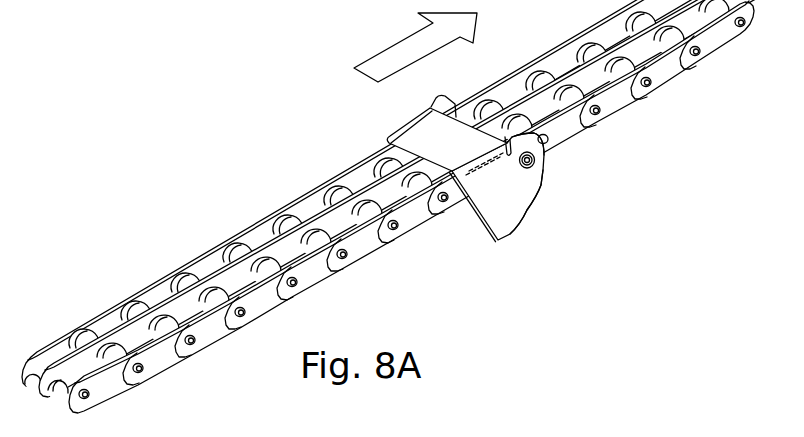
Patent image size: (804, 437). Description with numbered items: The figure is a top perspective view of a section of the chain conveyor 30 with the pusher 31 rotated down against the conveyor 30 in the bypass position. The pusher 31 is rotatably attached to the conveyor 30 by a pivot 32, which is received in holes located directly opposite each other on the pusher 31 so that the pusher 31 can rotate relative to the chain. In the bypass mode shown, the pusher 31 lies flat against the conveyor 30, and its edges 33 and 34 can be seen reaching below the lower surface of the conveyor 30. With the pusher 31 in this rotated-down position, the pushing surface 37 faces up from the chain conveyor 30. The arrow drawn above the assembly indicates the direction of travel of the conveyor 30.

The chain conveyor 30 is at (621, 105).
The pusher 31 is at (503, 212).
The pivot 32 is at (540, 152).
The edge 33 is at (540, 205).
The edge 34 is at (543, 168).
The pushing surface 37 is at (412, 136).